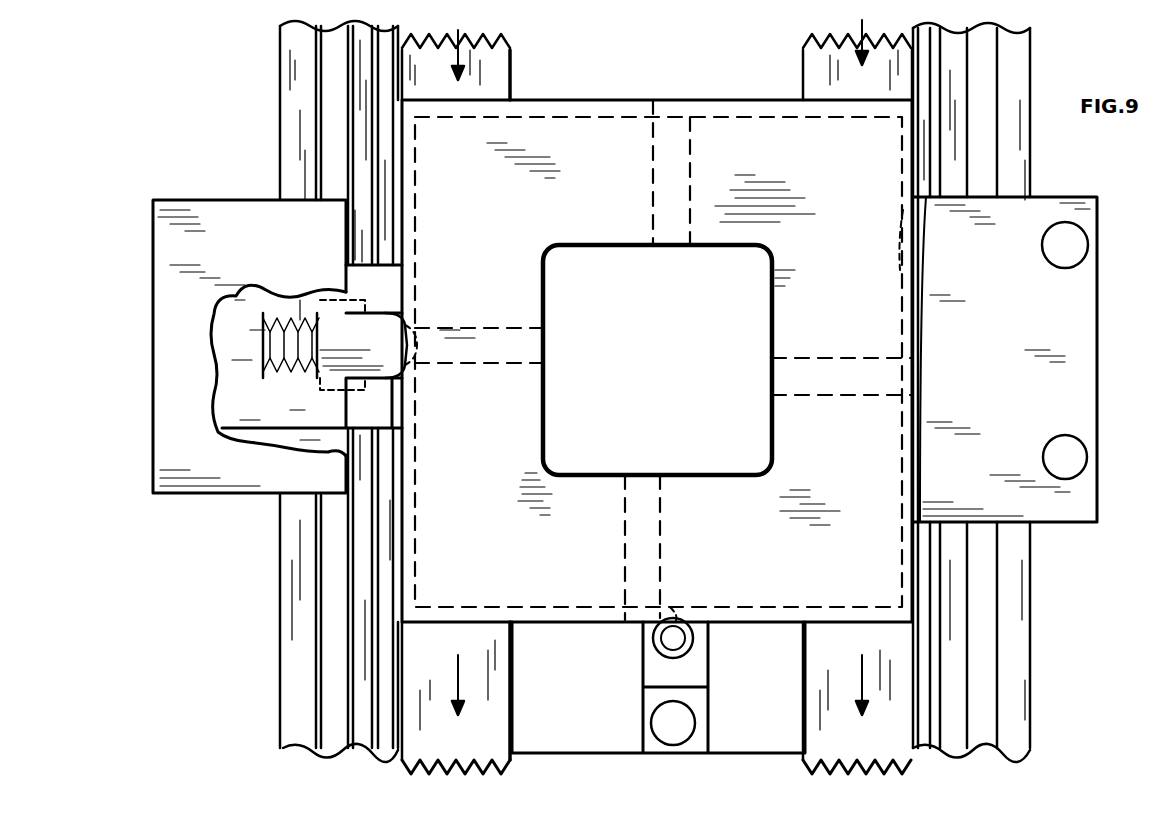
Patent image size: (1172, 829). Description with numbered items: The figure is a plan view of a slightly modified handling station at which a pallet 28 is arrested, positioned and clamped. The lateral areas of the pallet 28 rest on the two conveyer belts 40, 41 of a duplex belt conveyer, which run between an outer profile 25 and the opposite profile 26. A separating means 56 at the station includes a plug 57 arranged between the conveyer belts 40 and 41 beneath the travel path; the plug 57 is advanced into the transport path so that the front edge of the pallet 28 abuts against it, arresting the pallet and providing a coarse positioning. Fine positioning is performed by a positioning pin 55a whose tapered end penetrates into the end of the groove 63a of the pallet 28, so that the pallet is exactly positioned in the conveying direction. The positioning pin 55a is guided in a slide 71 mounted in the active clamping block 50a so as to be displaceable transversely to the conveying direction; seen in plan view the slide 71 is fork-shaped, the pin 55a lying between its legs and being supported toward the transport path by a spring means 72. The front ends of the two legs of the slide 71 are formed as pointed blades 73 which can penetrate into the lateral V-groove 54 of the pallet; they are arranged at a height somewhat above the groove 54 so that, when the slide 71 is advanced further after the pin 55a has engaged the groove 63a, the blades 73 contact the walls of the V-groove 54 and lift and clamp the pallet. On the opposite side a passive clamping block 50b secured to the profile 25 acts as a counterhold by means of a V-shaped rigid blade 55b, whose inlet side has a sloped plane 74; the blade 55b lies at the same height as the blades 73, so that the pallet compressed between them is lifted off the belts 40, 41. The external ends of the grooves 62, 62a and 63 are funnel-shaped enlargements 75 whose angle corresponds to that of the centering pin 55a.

The profile 25 is at (1034, 60).
The left vertical channel member 26 is at (278, 84).
The pallet 28 is at (566, 98).
The conveyer belt 40 is at (490, 76).
The conveyer belt 41 is at (809, 74).
The clamping block 50a is at (160, 232).
The clamping block 50b is at (1078, 300).
The V-groove 54 is at (403, 613).
The positioning pin 55a is at (392, 358).
The blade 55b is at (913, 512).
The separating means 56 is at (713, 698).
The plug 57 is at (656, 642).
The groove 62 is at (664, 524).
The groove 62a is at (833, 358).
The groove 63 is at (690, 152).
The groove 63a is at (440, 329).
The slide 71 is at (360, 268).
The spring means 72 is at (272, 378).
The pointed blades 73 is at (402, 273).
The sloped plane 74 is at (902, 208).
The slot edge 75 is at (690, 100).